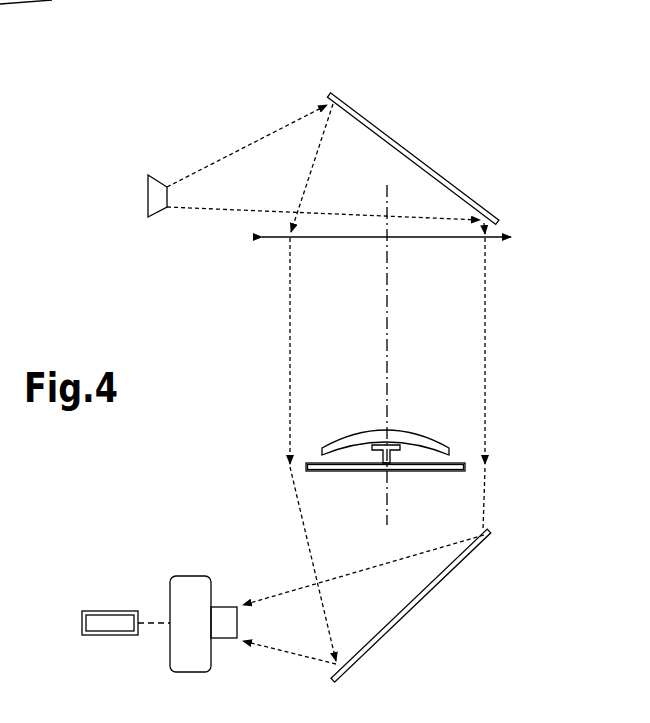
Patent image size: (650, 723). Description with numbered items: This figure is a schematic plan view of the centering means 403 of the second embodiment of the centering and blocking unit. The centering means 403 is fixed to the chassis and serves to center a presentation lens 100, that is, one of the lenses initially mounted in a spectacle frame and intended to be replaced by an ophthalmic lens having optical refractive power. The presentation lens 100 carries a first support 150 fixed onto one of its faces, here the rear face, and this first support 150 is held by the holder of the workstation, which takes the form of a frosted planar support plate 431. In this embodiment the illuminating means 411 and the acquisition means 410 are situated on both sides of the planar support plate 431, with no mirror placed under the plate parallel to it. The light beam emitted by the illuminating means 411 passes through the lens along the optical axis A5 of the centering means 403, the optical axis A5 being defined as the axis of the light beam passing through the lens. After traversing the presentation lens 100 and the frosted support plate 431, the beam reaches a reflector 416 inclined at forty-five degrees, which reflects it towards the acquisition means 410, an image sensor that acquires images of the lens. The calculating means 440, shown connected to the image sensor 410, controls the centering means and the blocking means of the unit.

The centering means 403 is at (402, 96).
The illuminating means 411 is at (160, 217).
The optical axis A5 is at (385, 198).
The presentation lens 100 is at (357, 432).
The first support 150 is at (390, 457).
The holder / planar support plate 431 is at (460, 462).
The reflector 416 is at (457, 590).
The image sensor / acquisition means 410 is at (192, 575).
The calculating means 440 is at (107, 610).